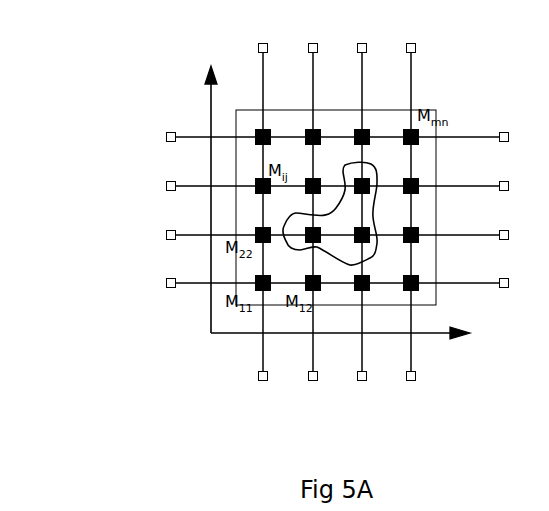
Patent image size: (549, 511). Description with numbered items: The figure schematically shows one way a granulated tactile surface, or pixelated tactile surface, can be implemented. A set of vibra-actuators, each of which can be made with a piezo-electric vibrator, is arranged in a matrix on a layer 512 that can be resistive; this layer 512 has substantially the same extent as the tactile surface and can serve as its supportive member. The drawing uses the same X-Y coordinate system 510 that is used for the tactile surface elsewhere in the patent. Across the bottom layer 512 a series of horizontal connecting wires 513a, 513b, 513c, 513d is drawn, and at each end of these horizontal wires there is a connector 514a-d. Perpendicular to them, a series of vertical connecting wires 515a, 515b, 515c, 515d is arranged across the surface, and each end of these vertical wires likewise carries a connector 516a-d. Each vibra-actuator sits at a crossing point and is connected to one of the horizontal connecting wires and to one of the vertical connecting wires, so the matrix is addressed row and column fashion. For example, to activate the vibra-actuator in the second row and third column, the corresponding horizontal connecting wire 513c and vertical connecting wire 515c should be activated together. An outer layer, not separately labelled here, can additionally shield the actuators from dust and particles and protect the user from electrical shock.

The coordinate system 510 is at (211, 102).
The layer 512 is at (437, 175).
The horizontal connecting wire 513a is at (190, 137).
The horizontal connecting wire 513b is at (190, 186).
The horizontal connecting wire 513c is at (190, 235).
The horizontal connecting wire 513d is at (190, 283).
The connectors 514a-d is at (171, 288).
The vertical connecting wire 515a is at (263, 345).
The vertical connecting wire 515b is at (313, 345).
The vertical connecting wire 515c is at (362, 345).
The vertical connecting wire 515d is at (411, 345).
The connectors 516a-d is at (258, 379).